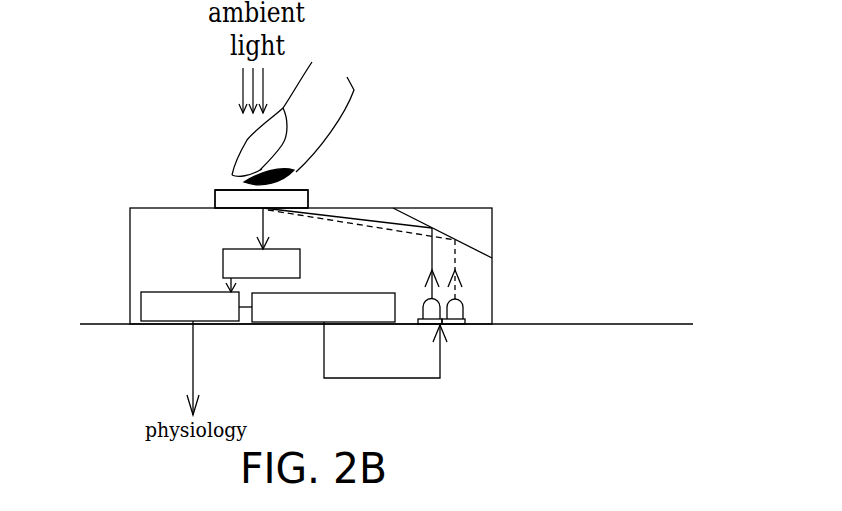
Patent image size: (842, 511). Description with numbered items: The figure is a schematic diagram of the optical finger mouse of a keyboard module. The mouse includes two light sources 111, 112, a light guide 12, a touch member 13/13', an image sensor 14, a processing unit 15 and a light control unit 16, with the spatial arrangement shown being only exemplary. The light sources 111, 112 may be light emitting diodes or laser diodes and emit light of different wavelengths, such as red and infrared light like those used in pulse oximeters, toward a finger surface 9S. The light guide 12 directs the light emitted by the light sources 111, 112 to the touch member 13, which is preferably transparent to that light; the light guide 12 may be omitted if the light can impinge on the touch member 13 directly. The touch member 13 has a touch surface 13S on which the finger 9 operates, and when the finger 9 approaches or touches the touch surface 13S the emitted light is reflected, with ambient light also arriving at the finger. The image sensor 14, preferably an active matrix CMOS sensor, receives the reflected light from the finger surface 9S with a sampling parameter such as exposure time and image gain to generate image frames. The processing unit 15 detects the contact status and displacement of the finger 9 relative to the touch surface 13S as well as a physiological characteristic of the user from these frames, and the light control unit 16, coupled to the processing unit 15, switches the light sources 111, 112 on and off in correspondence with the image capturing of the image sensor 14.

The finger 9 is at (326, 89).
The finger surface 9S is at (233, 175).
The light guide 12 is at (470, 234).
The touch member 13 is at (175, 189).
The touch member 13' is at (261, 199).
The touch surface 13S is at (302, 190).
The image sensor 14 is at (223, 258).
The processing unit 15 is at (142, 303).
The light control unit 16 is at (293, 322).
The light source 111 is at (418, 313).
The light source 112 is at (464, 312).